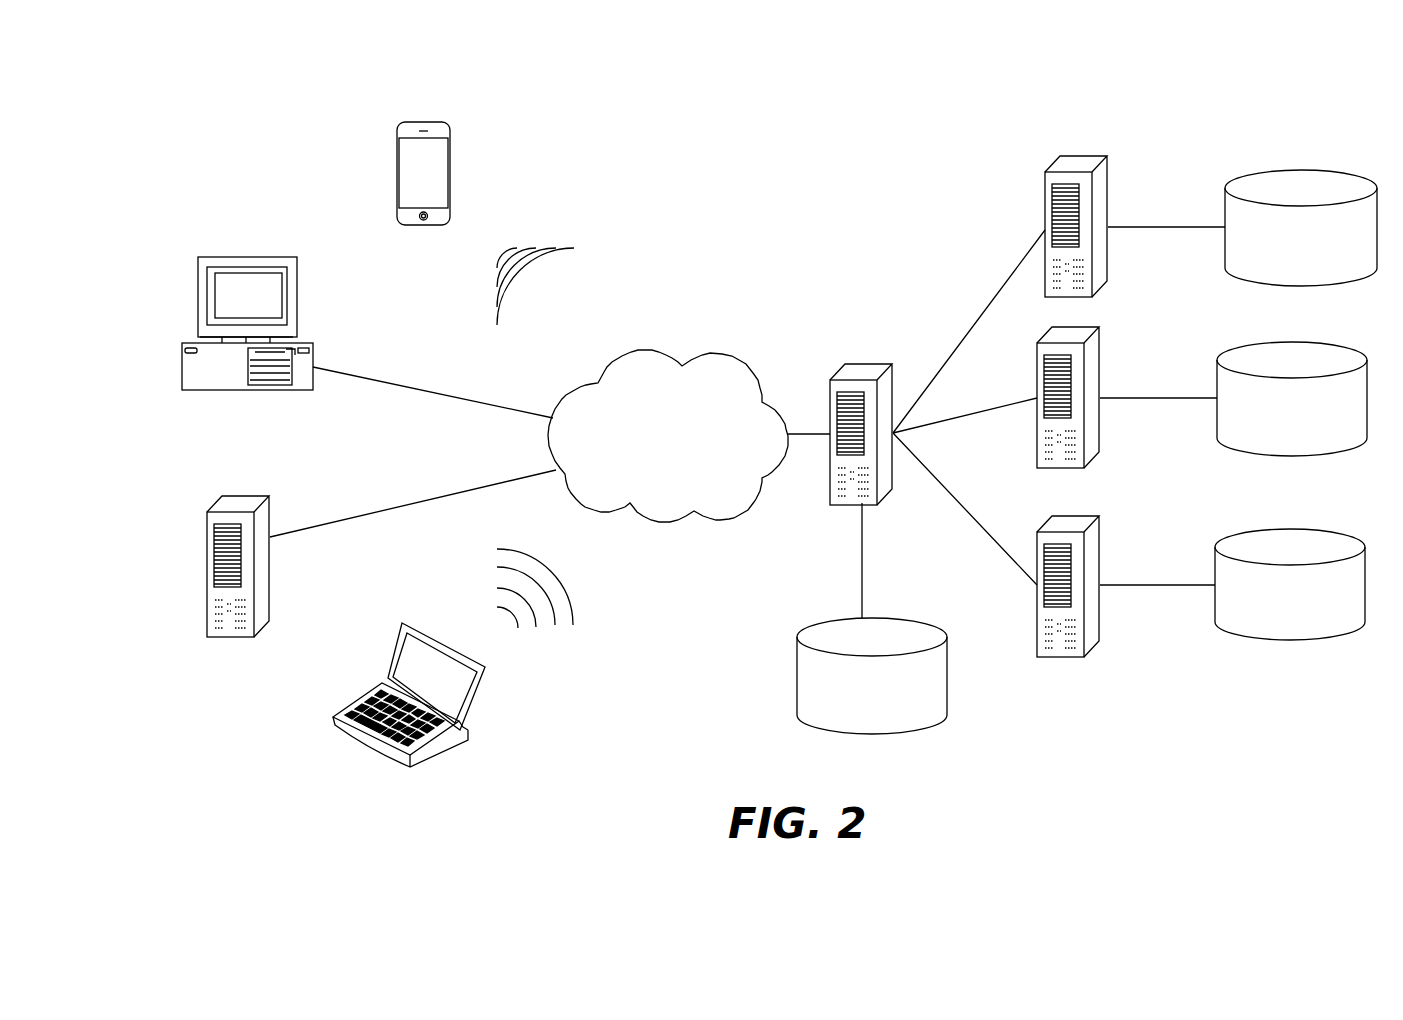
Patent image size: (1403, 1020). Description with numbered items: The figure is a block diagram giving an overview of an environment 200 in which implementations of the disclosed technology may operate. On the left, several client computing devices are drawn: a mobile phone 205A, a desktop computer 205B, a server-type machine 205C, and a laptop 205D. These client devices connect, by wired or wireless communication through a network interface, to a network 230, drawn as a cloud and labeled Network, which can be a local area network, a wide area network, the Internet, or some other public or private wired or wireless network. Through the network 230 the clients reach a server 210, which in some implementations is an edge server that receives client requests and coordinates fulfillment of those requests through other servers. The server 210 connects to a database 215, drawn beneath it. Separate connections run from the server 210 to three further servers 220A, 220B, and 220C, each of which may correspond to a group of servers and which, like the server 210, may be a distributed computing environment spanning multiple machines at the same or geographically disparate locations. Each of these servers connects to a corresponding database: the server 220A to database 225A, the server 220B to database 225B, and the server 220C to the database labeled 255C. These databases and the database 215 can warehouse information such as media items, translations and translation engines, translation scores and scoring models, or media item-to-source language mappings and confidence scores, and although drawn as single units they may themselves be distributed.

The environment 200 is at (885, 125).
The client computing device 205A is at (440, 122).
The client computing device 205B is at (287, 257).
The client computing device 205C is at (260, 496).
The client computing device 205D is at (480, 697).
The network 230 is at (727, 355).
The server 210 is at (872, 362).
The database 215 is at (922, 622).
The server 220A is at (1107, 156).
The server 220B is at (1100, 327).
The server 220C is at (1098, 513).
The database 225A is at (1297, 170).
The database 225B is at (1290, 342).
The database 255C is at (1285, 529).